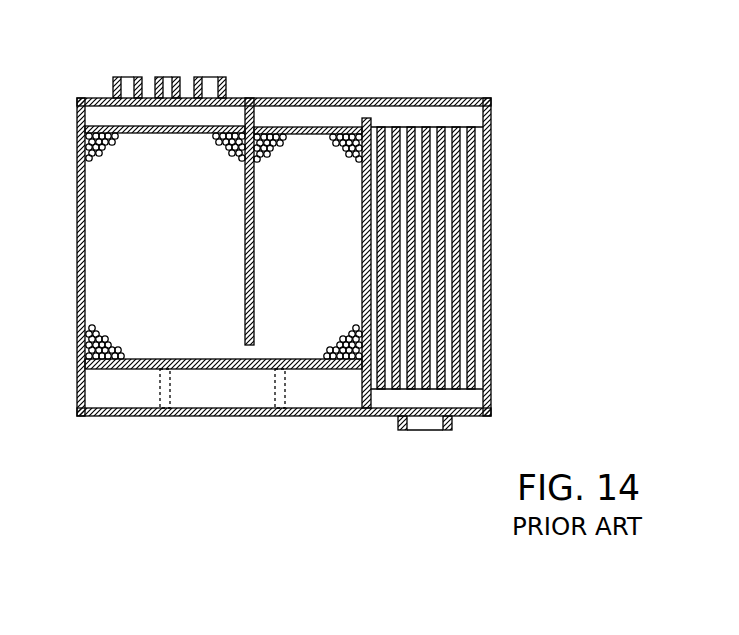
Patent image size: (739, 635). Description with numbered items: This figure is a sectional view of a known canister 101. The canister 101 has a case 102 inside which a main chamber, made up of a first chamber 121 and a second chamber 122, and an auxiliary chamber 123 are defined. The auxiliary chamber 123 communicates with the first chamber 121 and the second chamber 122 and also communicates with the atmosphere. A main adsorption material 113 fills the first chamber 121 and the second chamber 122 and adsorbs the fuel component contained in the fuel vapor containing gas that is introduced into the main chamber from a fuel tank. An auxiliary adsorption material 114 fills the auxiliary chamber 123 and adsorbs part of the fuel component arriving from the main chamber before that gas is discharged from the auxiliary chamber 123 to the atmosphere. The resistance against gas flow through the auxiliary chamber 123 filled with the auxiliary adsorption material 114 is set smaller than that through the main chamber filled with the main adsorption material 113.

The canister 101 is at (558, 99).
The case 102 is at (268, 98).
The main adsorption material 113 is at (215, 140).
The auxiliary adsorption material 114 is at (474, 322).
The first chamber 121 is at (108, 272).
The second chamber 122 is at (275, 308).
The auxiliary chamber 123 is at (459, 121).